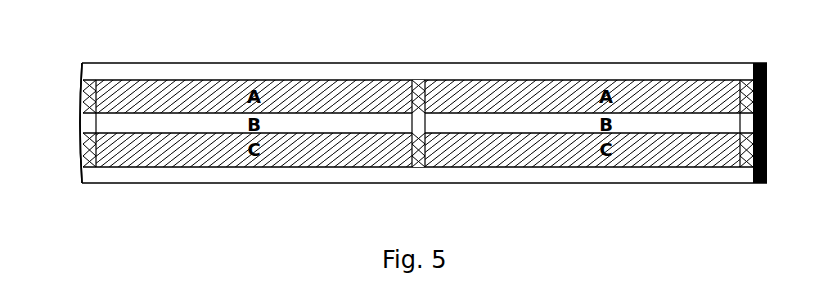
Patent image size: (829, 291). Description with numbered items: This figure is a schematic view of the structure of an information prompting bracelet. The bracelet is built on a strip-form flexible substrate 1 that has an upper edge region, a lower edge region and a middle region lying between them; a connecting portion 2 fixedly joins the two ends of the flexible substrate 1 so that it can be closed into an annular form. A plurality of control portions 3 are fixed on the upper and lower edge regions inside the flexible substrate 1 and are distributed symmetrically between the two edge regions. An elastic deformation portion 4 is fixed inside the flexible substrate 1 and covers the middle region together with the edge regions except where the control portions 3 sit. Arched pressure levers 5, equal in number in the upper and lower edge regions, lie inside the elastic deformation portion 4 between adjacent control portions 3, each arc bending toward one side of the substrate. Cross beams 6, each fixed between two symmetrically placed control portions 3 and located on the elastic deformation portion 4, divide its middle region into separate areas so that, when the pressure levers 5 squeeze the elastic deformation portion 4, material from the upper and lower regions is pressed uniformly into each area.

The flexible substrate 1 is at (655, 68).
The connecting portion 2 is at (763, 63).
The control portion 3 is at (82, 183).
The elastic deformation portion 4 is at (503, 122).
The pressure lever 5 is at (305, 165).
The cross beam 6 is at (747, 120).